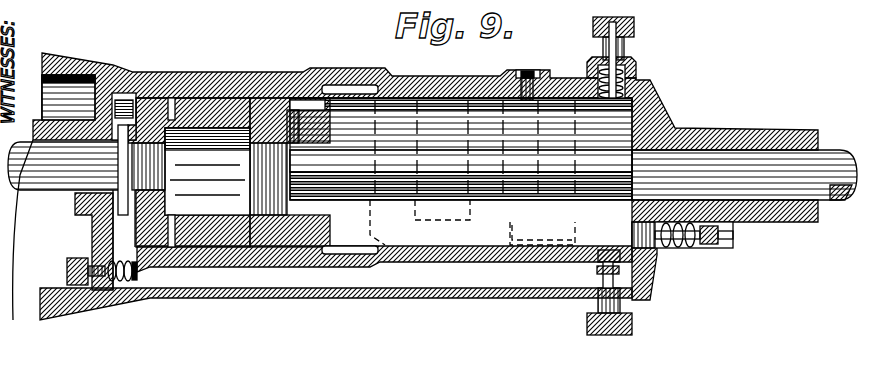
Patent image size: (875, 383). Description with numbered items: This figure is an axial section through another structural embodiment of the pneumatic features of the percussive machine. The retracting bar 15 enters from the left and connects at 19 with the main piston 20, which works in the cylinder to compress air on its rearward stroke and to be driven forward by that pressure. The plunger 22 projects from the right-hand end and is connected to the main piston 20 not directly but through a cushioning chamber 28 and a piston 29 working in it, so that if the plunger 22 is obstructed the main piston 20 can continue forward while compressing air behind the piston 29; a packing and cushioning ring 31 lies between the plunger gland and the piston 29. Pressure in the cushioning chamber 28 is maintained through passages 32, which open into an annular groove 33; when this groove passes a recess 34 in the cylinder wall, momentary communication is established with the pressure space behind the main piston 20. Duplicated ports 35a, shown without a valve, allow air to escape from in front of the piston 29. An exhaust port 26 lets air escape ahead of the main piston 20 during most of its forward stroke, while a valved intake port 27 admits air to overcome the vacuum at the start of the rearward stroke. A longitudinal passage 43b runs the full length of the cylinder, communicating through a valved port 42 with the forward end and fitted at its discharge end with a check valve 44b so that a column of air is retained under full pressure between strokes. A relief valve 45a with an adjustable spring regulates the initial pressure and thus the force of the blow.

The retracting bar 15 is at (64, 166).
The connection of retracting bar to main piston 19 is at (88, 216).
The main piston 20 is at (235, 242).
The plunger 22 is at (838, 158).
The exhaust port 26 is at (521, 78).
The valved intake port 27 is at (660, 250).
The cushioning chamber 28 is at (207, 171).
The piston 29 is at (256, 200).
The packing and cushioning ring 31 is at (292, 142).
The passages 32 is at (173, 168).
The annular groove 33 is at (172, 250).
The recess 34 is at (352, 254).
The ports 35a is at (300, 247).
The valved port 42 is at (612, 258).
The longitudinal passage 43b is at (530, 285).
The check valve 44b is at (150, 288).
The relief valve 45a is at (622, 65).